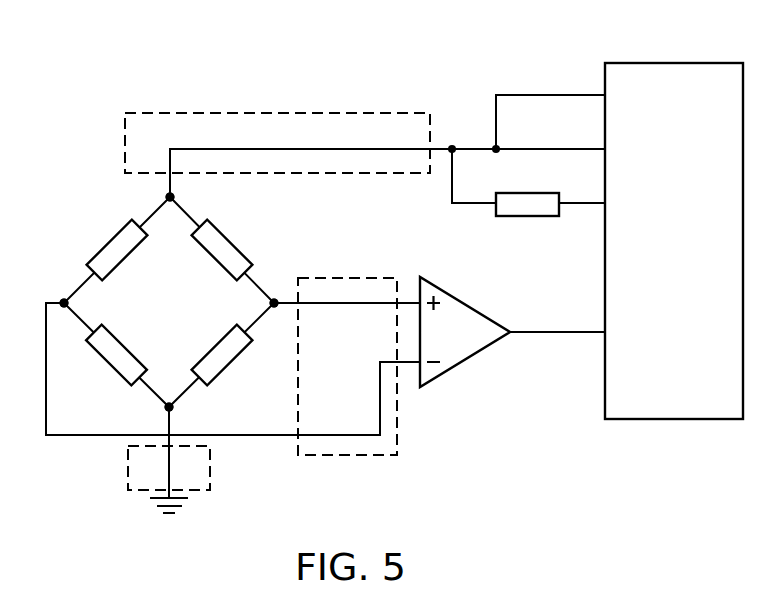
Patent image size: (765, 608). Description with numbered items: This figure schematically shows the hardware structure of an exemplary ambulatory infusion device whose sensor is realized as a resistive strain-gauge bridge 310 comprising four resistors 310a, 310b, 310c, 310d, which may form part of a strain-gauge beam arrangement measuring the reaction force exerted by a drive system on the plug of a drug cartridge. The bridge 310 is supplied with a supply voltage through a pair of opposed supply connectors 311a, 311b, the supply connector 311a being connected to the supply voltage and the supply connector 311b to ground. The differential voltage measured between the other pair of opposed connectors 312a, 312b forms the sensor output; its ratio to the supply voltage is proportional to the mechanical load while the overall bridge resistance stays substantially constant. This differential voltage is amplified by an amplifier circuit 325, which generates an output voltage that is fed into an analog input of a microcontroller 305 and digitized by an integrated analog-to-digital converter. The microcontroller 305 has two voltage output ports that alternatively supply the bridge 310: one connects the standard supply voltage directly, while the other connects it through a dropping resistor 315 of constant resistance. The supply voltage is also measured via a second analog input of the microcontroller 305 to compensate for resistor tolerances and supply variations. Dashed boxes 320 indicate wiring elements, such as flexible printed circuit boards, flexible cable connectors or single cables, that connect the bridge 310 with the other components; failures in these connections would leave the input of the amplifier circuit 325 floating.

The microcontroller 305 is at (685, 62).
The resistive strain-gauge bridge 310 is at (110, 198).
The resistor 310a is at (108, 238).
The resistor 310b is at (232, 241).
The resistor 310c is at (125, 345).
The resistor 310d is at (232, 368).
The supply connector 311a is at (175, 198).
The supply connector 311b is at (165, 408).
The connector 312a is at (63, 300).
The connector 312b is at (276, 298).
The dropping resistor 315 is at (528, 217).
The dashed boxes 320 is at (238, 112).
The amplifier circuit 325 is at (462, 363).